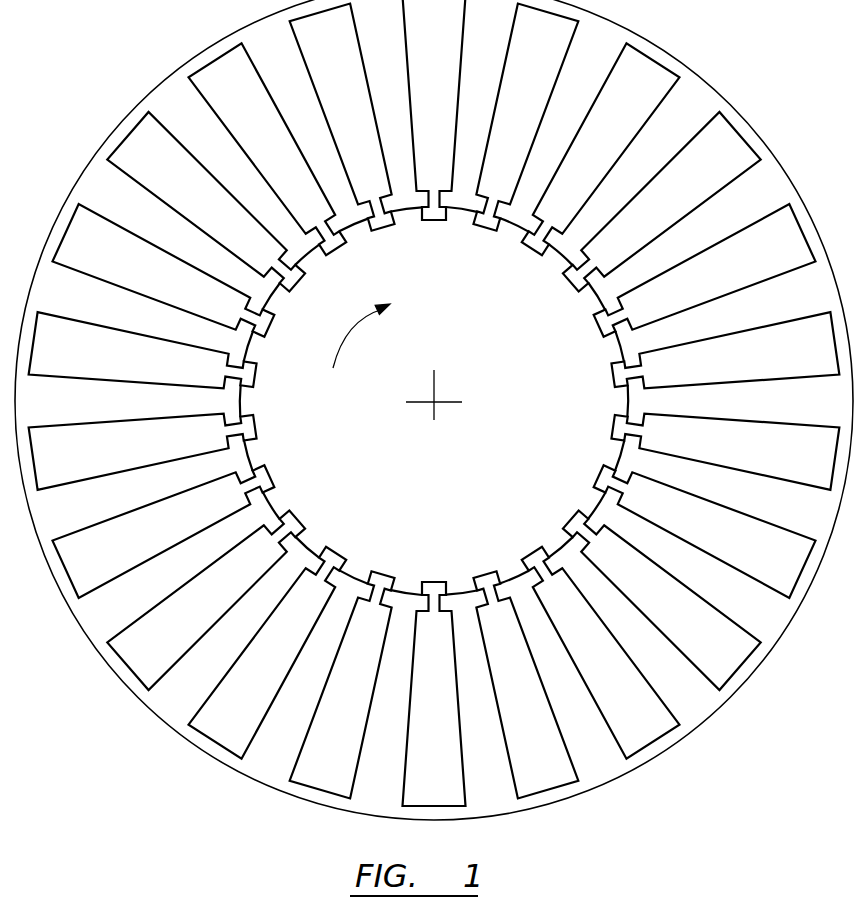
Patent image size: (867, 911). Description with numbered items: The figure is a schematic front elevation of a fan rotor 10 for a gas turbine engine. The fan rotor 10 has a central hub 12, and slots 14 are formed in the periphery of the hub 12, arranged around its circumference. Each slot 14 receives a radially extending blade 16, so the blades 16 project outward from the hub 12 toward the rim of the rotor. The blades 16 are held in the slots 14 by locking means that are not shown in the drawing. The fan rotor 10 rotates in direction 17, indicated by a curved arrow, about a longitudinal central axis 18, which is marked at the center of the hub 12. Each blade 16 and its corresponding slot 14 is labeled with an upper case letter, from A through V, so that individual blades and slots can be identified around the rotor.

The fan rotor 10 is at (122, 45).
The central hub 12 is at (444, 474).
The slots 14 is at (607, 362).
The blade 16 is at (110, 265).
The direction of rotation 17 is at (350, 345).
The longitudinal central axis 18 is at (434, 402).